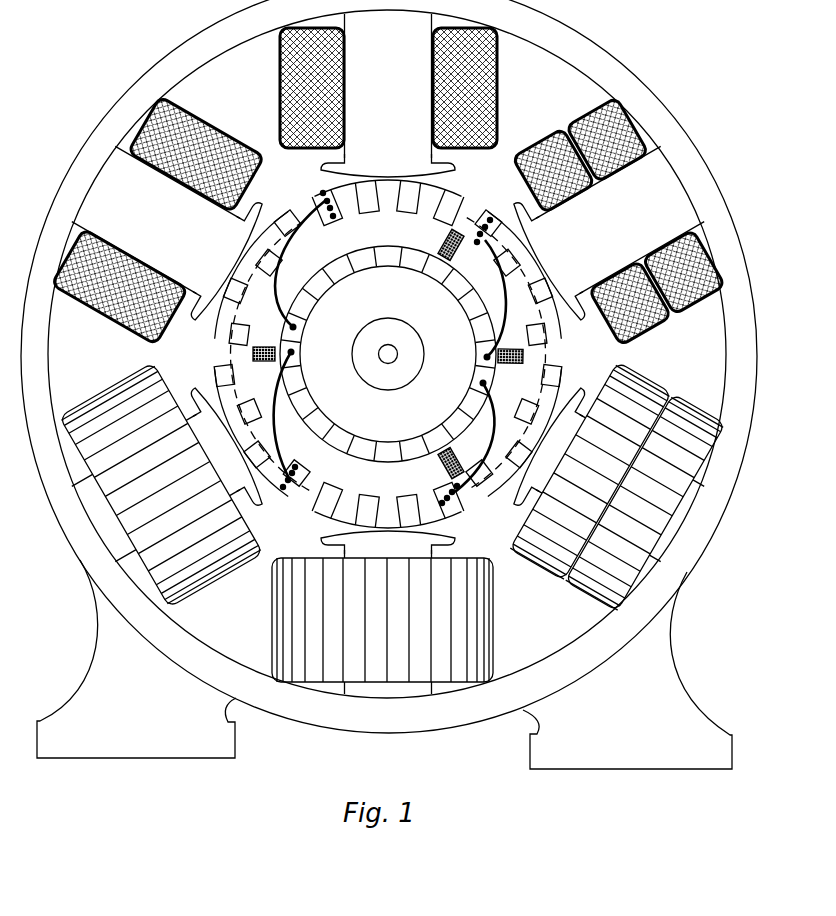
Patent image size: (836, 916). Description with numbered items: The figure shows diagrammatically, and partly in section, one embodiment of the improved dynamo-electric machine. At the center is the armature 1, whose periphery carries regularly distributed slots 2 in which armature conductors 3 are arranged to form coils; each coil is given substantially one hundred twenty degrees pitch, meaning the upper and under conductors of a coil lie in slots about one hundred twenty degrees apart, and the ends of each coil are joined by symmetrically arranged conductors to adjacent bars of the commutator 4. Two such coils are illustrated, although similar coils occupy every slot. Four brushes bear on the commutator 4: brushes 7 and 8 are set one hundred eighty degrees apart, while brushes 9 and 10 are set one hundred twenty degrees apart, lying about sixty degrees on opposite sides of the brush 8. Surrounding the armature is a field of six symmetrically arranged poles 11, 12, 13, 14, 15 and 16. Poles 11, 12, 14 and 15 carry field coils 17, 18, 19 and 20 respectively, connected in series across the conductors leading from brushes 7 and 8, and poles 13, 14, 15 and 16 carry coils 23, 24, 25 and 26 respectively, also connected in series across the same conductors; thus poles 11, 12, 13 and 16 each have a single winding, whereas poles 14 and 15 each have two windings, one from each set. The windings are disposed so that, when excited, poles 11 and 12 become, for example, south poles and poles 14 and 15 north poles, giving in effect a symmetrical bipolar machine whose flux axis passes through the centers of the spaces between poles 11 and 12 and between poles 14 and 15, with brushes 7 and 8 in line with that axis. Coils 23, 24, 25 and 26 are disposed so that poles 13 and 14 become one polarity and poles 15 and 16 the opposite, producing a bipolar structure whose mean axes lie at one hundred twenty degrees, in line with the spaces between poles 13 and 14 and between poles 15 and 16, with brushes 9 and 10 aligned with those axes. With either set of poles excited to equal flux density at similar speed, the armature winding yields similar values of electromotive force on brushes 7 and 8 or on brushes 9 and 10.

The armature 1 is at (387, 205).
The slots 2 is at (490, 218).
The armature conductors 3 is at (296, 468).
The commutator 4 is at (482, 335).
The brush 7 is at (266, 345).
The brush 8 is at (503, 366).
The brush 9 is at (444, 245).
The brush 10 is at (444, 470).
The field pole 11 is at (164, 483).
The field pole 12 is at (164, 225).
The field pole 13 is at (388, 95).
The field pole 14 is at (612, 225).
The field pole 15 is at (612, 483).
The field pole 16 is at (388, 612).
The field coil 17 is at (161, 485).
The field coil 18 is at (118, 318).
The field coil 19 is at (645, 337).
The field coil 20 is at (591, 471).
The coil 23 is at (501, 96).
The coil 24 is at (672, 320).
The coil 25 is at (645, 502).
The coil 26 is at (382, 620).